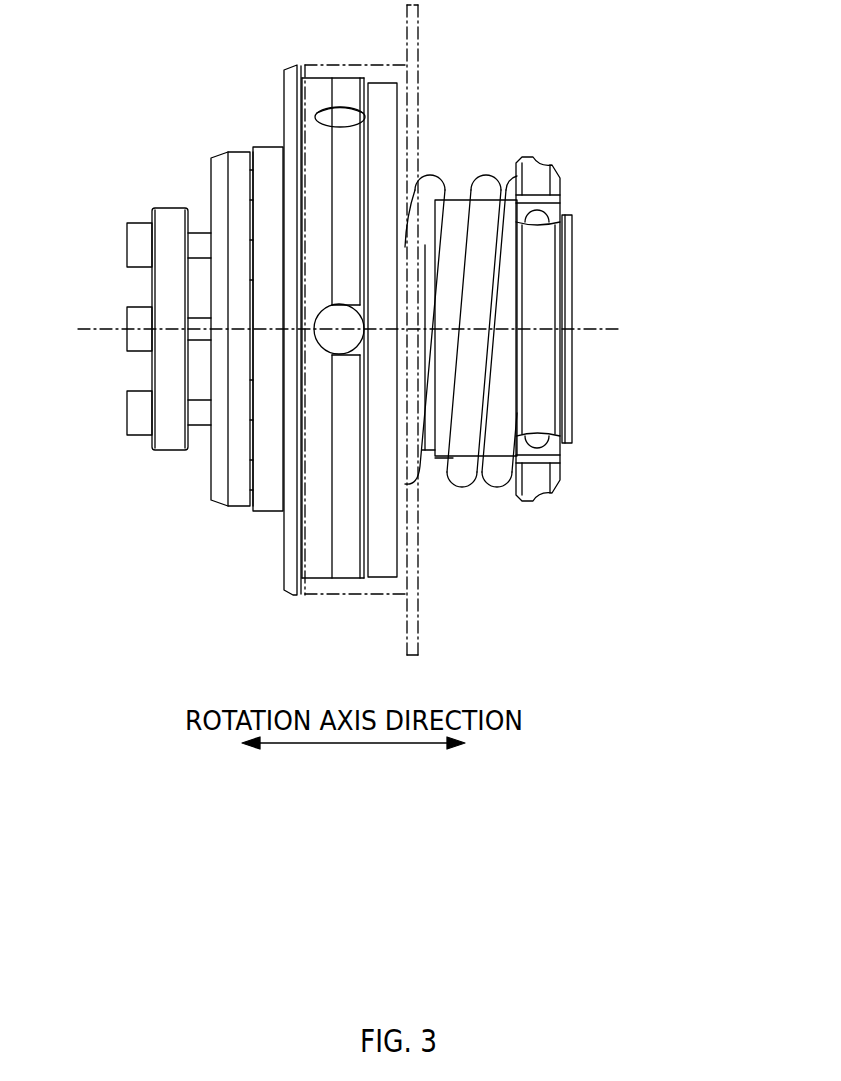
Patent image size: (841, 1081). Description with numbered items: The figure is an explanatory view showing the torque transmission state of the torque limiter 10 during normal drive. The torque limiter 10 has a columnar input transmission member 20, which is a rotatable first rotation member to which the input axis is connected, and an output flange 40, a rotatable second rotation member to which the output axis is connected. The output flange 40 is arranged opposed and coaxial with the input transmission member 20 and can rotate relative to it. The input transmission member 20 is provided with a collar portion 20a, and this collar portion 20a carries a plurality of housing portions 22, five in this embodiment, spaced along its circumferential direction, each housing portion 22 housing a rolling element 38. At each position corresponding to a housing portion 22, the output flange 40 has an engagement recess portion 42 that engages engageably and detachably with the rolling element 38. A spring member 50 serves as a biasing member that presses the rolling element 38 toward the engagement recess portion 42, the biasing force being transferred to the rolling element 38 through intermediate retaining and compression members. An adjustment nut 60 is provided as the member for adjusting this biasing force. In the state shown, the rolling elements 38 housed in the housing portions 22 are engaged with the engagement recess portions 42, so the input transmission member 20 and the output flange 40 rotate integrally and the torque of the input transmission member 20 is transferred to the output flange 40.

The torque limiter 10 is at (452, 590).
The input transmission member 20 is at (492, 328).
The collar portion 20a is at (348, 170).
The housing portion 22 is at (343, 322).
The rolling element 38 is at (469, 329).
The output flange 40 is at (315, 133).
The engagement recess portion 42 is at (313, 314).
The spring member 50 is at (482, 268).
The adjustment nut 60 is at (535, 405).